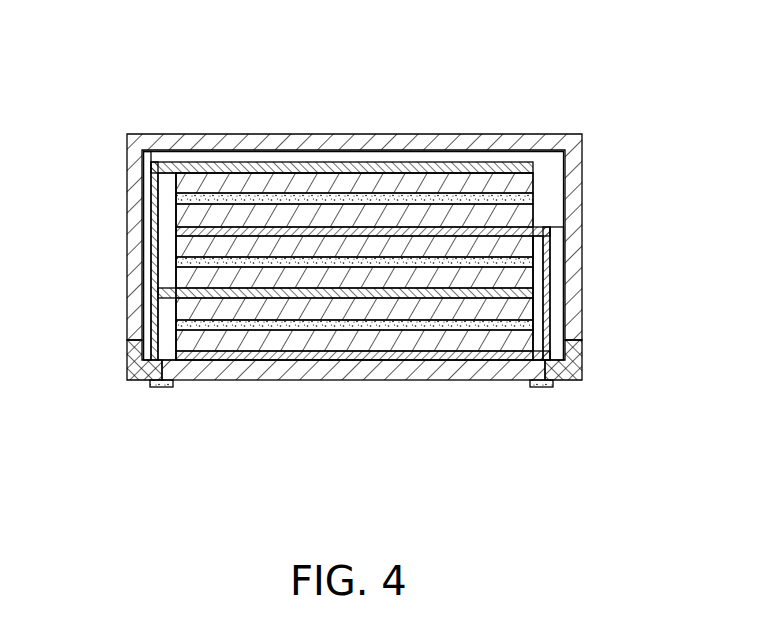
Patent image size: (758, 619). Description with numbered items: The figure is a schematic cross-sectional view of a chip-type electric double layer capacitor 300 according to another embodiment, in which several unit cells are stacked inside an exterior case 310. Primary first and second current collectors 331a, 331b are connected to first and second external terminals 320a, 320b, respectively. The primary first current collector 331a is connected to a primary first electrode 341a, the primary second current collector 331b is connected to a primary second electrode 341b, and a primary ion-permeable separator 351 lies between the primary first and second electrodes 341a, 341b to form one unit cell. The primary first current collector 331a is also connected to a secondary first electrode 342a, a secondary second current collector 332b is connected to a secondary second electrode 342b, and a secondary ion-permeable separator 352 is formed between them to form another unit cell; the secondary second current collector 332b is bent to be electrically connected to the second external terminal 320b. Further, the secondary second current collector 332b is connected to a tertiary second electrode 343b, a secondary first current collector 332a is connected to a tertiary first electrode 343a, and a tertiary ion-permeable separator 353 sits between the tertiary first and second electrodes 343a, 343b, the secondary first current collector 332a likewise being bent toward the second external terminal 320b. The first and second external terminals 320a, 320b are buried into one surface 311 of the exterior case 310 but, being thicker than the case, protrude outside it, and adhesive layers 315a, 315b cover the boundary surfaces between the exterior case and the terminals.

The chip-type electric double layer capacitor 300 is at (379, 49).
The case 310 is at (573, 145).
The one surface of the exterior case 311 is at (350, 380).
The adhesive layer 315a is at (170, 387).
The adhesive layer 315b is at (535, 387).
The first external terminal 320a is at (135, 380).
The second external terminal 320b is at (562, 380).
The primary first current collector 331a is at (143, 330).
The primary second current collector 331b is at (556, 348).
The secondary first current collector 332a is at (151, 193).
The secondary second current collector 332b is at (548, 227).
The primary first electrode 341a is at (178, 312).
The primary second electrode 341b is at (544, 322).
The secondary first electrode 342a is at (180, 276).
The secondary second electrode 342b is at (534, 240).
The tertiary first electrode 343a is at (183, 178).
The tertiary second electrode 343b is at (533, 198).
The primary ion-permeable separator 351 is at (558, 313).
The secondary ion-permeable separator 352 is at (545, 268).
The tertiary ion-permeable separator 353 is at (566, 164).